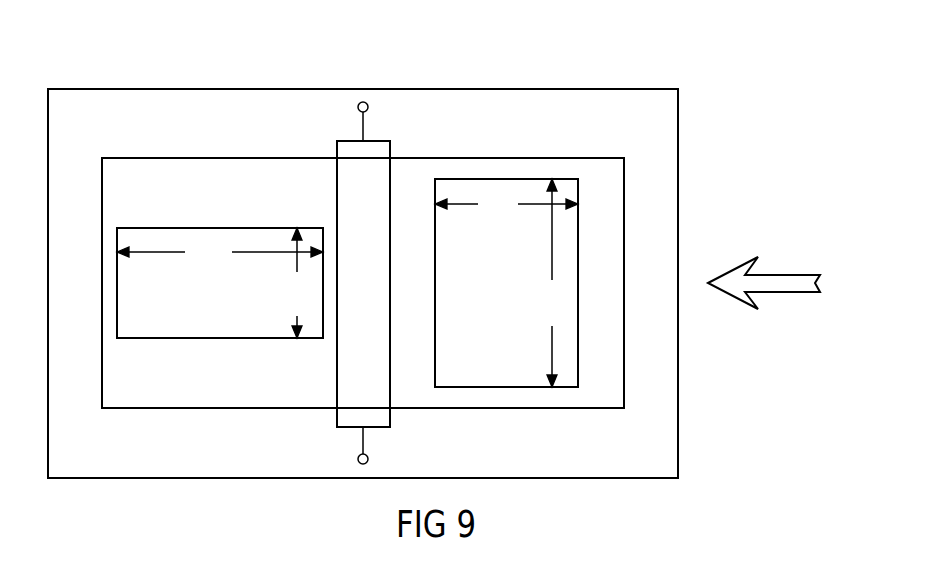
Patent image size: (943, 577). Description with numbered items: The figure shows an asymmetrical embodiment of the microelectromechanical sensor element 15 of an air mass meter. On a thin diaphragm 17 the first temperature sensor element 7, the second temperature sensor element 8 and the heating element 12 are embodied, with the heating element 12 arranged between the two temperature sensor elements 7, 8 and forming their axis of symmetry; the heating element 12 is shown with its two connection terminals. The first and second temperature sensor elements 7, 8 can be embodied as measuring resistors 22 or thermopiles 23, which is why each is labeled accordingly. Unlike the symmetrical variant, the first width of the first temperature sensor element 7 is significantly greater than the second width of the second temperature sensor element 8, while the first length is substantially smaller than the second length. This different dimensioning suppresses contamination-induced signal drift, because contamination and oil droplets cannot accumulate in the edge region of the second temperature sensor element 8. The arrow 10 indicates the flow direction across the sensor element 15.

The sensor element 15 is at (643, 110).
The thin diaphragm 17 is at (605, 337).
The second temperature sensor element 8 is at (220, 181).
The first temperature sensor element 7 is at (506, 205).
The heating element 12 is at (375, 152).
The direction of movement 10 is at (780, 287).
The measuring resistors 22 is at (220, 283).
The thermopiles 23 is at (506, 283).